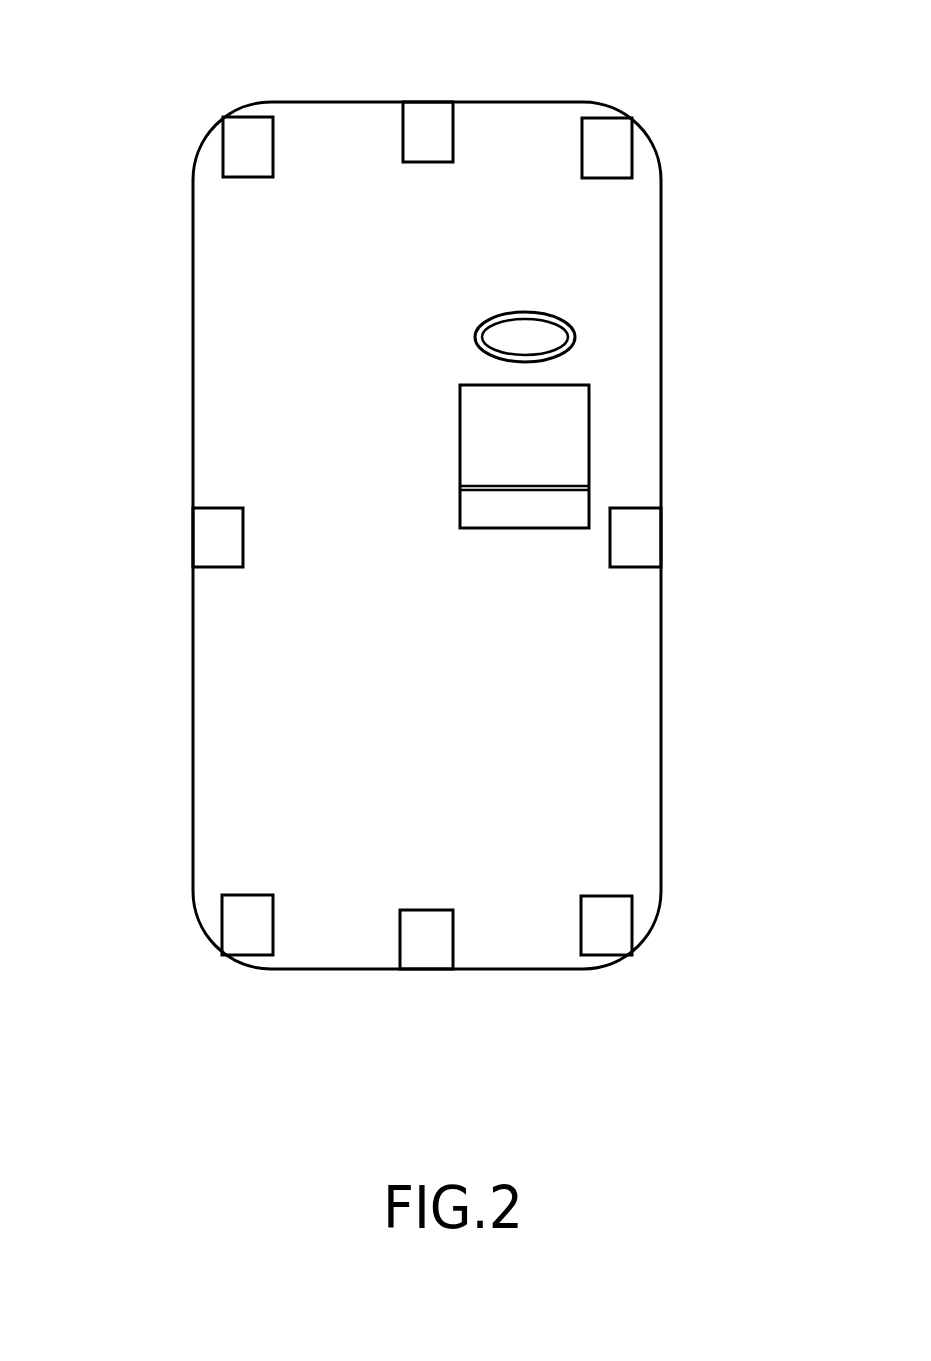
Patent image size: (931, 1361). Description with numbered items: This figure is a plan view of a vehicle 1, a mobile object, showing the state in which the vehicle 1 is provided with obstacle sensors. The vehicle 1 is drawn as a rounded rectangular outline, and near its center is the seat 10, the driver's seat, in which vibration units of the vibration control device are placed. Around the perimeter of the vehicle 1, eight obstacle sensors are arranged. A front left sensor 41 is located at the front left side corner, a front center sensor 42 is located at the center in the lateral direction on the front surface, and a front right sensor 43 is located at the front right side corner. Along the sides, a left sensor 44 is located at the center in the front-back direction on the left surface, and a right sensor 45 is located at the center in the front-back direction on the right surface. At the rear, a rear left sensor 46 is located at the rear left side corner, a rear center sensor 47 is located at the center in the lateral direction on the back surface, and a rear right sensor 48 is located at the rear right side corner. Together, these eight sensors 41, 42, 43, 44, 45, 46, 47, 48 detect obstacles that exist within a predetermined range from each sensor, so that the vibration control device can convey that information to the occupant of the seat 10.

The vehicle 1 is at (728, 157).
The seat 10 is at (562, 442).
The front left sensor 41 is at (246, 143).
The front center sensor 42 is at (430, 135).
The front right sensor 43 is at (609, 143).
The left sensor 44 is at (215, 535).
The right sensor 45 is at (637, 537).
The rear left sensor 46 is at (245, 930).
The rear center sensor 47 is at (430, 938).
The rear right sensor 48 is at (608, 929).